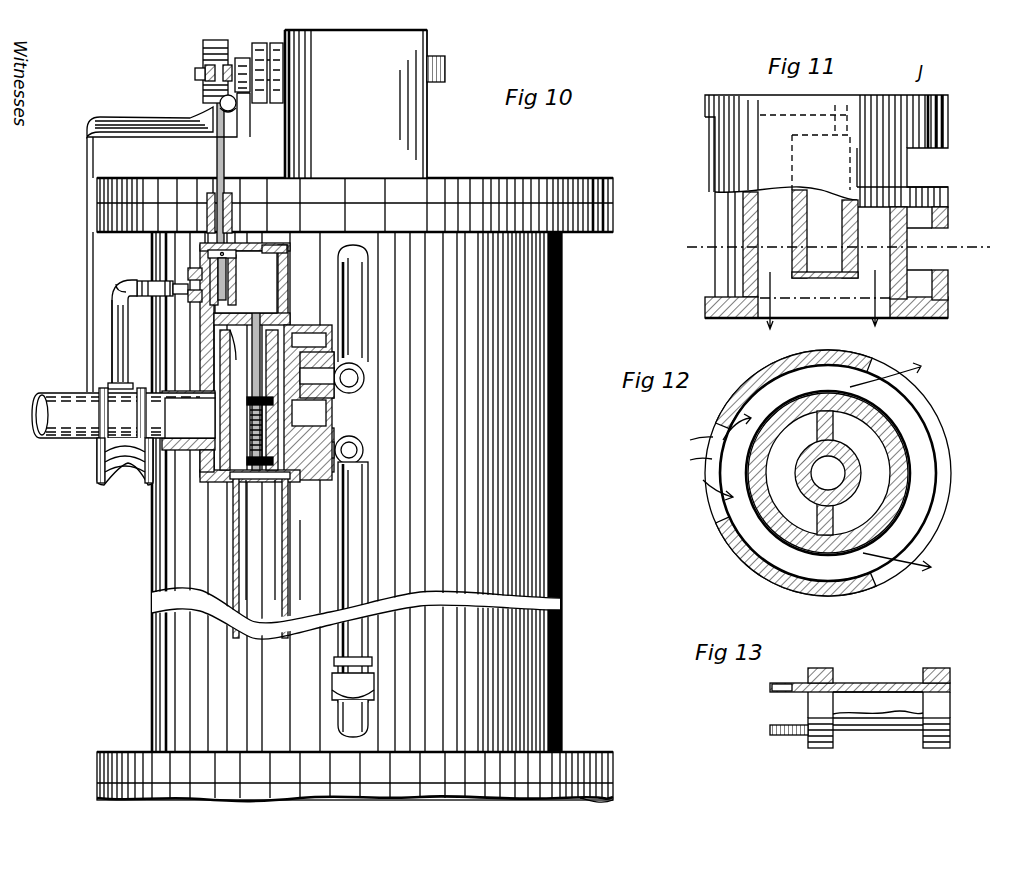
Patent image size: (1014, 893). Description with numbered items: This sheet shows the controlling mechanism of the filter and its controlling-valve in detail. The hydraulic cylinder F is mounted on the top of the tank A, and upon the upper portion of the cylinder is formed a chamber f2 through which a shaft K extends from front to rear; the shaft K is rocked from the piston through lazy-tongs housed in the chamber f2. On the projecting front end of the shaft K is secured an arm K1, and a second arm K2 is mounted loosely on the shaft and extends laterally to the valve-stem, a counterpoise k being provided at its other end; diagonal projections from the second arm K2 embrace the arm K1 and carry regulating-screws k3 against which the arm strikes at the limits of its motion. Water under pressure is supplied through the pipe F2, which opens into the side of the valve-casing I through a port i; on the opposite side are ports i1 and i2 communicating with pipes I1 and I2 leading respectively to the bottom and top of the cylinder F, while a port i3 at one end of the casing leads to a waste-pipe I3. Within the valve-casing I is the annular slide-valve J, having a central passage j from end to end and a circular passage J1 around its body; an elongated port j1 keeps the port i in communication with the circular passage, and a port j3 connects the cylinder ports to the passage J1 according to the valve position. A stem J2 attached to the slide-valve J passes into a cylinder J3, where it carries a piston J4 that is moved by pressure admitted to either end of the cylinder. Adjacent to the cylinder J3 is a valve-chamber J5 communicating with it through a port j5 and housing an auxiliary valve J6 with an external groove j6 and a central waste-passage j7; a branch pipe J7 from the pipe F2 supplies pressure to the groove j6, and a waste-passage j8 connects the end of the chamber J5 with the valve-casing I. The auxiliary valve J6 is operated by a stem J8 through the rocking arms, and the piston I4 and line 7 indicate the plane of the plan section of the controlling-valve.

In FIG. 10, the cylinder F is at (562, 554).
In FIG. 10, the tank A is at (613, 792).
In FIG. 10, the chamber f2 is at (365, 104).
In FIG. 10, the shaft K is at (203, 74).
In FIG. 10, the arm K1 is at (137, 118).
In FIG. 10, the second arm K2 is at (205, 78).
In FIG. 10, the cam disks k is at (258, 44).
In FIG. 10, the regulating-screws k3 is at (238, 107).
In FIG. 10, the stem J8 is at (215, 170).
In FIG. 10, the slide-valve J is at (330, 476).
In FIG. 10, the circular passage J1 is at (226, 458).
In FIG. 11, the circular passage J1 is at (730, 290).
In FIG. 12, the circular passage J1 is at (745, 540).
In FIG. 10, the stem J2 is at (299, 371).
In FIG. 11, the stem J2 is at (924, 166).
In FIG. 10, the cylinder J3 is at (286, 270).
In FIG. 10, the piston J4 is at (212, 262).
In FIG. 10, the valve-chamber J5 is at (208, 257).
In FIG. 10, the valve J6 is at (262, 246).
In FIG. 13, the valve J6 is at (820, 750).
In FIG. 10, the branch pipe J7 is at (112, 344).
In FIG. 10, the valve-casing I is at (205, 350).
In FIG. 10, the pipe I1 is at (368, 523).
In FIG. 10, the pipe I2 is at (383, 329).
In FIG. 10, the waste-pipe I3 is at (325, 572).
In FIG. 10, the valve spindle I4 is at (259, 361).
In FIG. 10, the port i is at (228, 432).
In FIG. 10, the port i1 is at (352, 380).
In FIG. 10, the port i2 is at (354, 452).
In FIG. 10, the port i3 is at (240, 474).
In FIG. 10, the passage j is at (245, 472).
In FIG. 11, the passage j is at (811, 234).
In FIG. 12, the passage j is at (868, 495).
In FIG. 10, the elongated port j1 is at (212, 438).
In FIG. 11, the elongated port j1 is at (722, 262).
In FIG. 12, the elongated port j1 is at (722, 472).
In FIG. 11, the port j3 is at (928, 262).
In FIG. 12, the port j3 is at (920, 523).
In FIG. 10, the port j5 is at (185, 300).
In FIG. 10, the groove or passage j6 is at (137, 284).
In FIG. 13, the groove or passage j6 is at (875, 681).
In FIG. 13, the central waste-passage j7 is at (835, 702).
In FIG. 10, the waste-passage j8 is at (205, 325).
In FIG. 10, the pipe F2 is at (62, 398).
In FIG. 11, the section line 7 is at (834, 268).